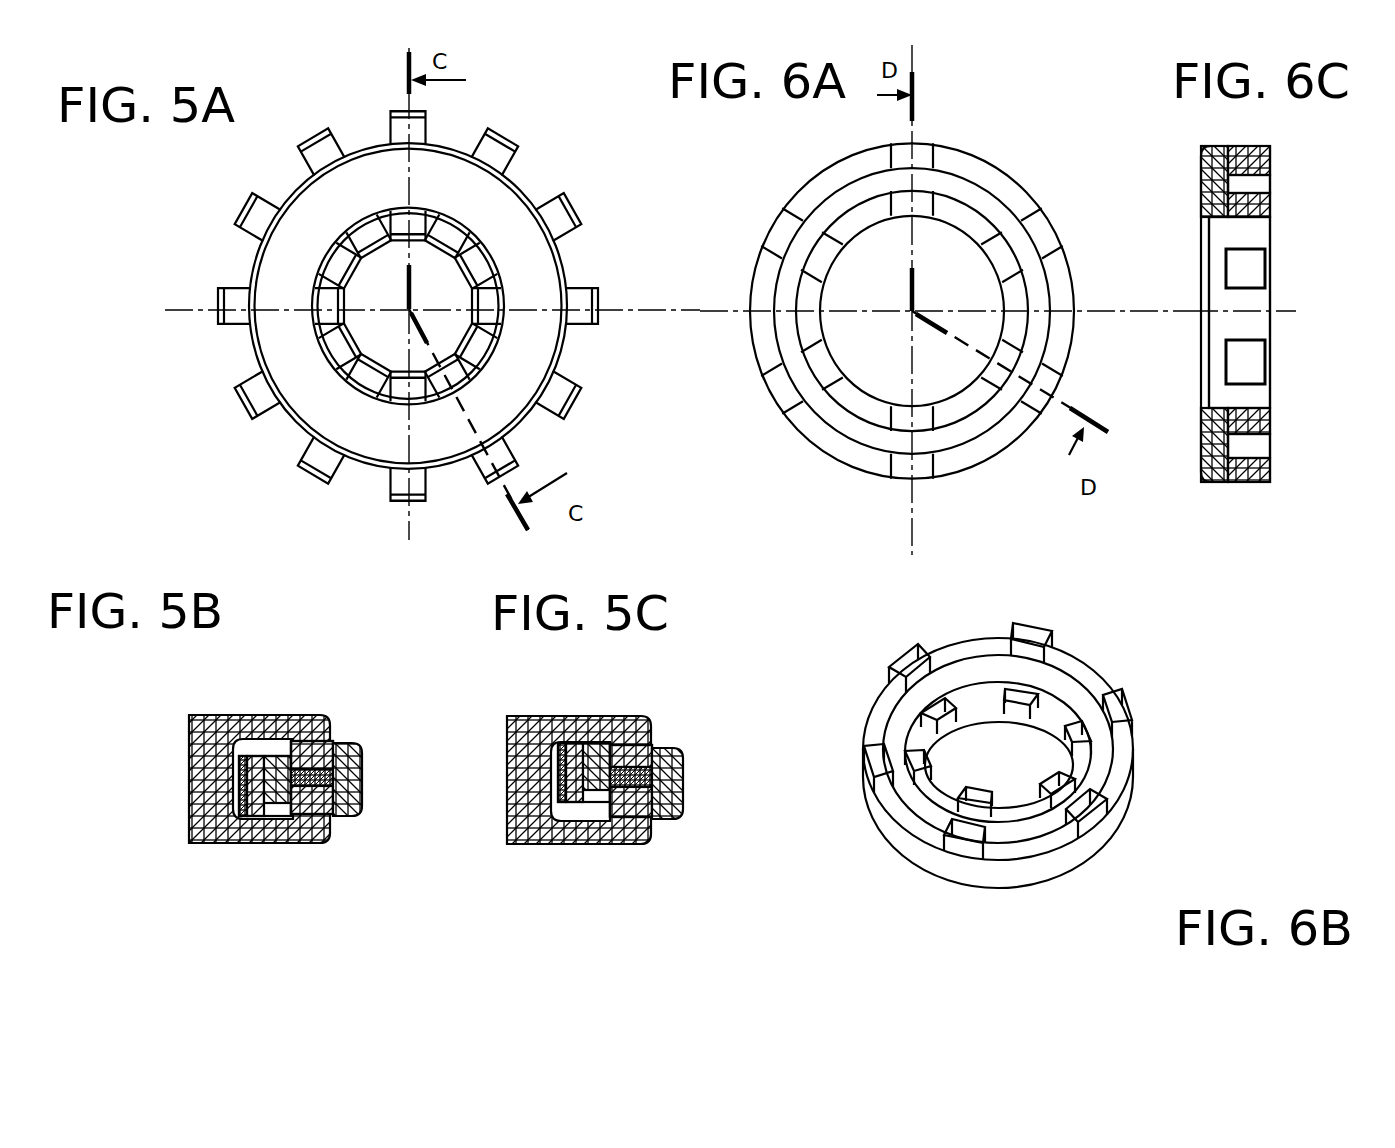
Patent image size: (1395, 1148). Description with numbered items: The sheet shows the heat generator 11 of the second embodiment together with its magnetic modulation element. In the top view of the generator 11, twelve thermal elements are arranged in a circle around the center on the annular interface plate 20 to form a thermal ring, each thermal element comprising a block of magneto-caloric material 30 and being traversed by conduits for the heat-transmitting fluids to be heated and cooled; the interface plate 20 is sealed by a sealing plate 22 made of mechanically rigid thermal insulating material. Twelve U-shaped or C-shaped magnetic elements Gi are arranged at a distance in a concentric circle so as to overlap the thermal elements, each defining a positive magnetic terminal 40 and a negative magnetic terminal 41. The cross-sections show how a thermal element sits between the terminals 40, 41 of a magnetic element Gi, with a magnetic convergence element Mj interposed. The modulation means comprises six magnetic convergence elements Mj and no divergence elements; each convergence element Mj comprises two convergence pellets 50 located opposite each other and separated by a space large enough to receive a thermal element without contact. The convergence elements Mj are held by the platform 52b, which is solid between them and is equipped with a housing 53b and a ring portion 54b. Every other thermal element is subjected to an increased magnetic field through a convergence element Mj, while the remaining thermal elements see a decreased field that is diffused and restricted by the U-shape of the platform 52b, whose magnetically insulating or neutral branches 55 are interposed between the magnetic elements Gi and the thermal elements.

In FIG. 5A, the generator 11 is at (427, 272).
In FIG. 5B, the annular interface plate 20 is at (247, 760).
In FIG. 5C, the annular interface plate 20 is at (561, 748).
In FIG. 5B, the sealing plate 22 is at (240, 773).
In FIG. 5C, the sealing plate 22 is at (561, 777).
In FIG. 5B, the block of magneto-caloric material 30 is at (301, 804).
In FIG. 5C, the block of magneto-caloric material 30 is at (629, 816).
In FIG. 5A, the positive magnetic terminal 40 is at (488, 302).
In FIG. 5A, the negative magnetic terminal 41 is at (453, 306).
In FIG. 6A, the convergence pellet 50 is at (950, 345).
In FIG. 6C, the convergence pellet 50 is at (1252, 355).
In FIG. 5B, the convergence pellet 50 is at (352, 756).
In FIG. 5C, the convergence pellet 50 is at (672, 748).
In FIG. 6B, the convergence pellet 50 is at (1045, 652).
In FIG. 5A, the platform 52b is at (478, 198).
In FIG. 6A, the platform 52b is at (823, 217).
In FIG. 6C, the platform 52b is at (1198, 468).
In FIG. 5B, the platform 52b is at (350, 816).
In FIG. 5C, the platform 52b is at (682, 818).
In FIG. 6B, the platform 52b is at (913, 845).
In FIG. 6C, the housing 53b is at (1218, 349).
In FIG. 6B, the housing 53b is at (960, 879).
In FIG. 6A, the intermediate rotor ring 54b is at (968, 191).
In FIG. 6B, the intermediate rotor ring 54b is at (1083, 694).
In FIG. 6A, the magnetically insulating or neutral branch 55 is at (1068, 295).
In FIG. 6C, the magnetically insulating or neutral branch 55 is at (1261, 395).
In FIG. 6B, the magnetically insulating or neutral branch 55 is at (1120, 782).
In FIG. 5A, the magnetic element Gi is at (560, 198).
In FIG. 5B, the magnetic element Gi is at (189, 822).
In FIG. 5C, the magnetic element Gi is at (507, 844).
In FIG. 6A, the magnetic convergence element Mj is at (1076, 237).
In FIG. 6C, the magnetic convergence element Mj is at (1284, 153).
In FIG. 5B, the magnetic convergence element Mj is at (315, 732).
In FIG. 5C, the magnetic convergence element Mj is at (627, 729).